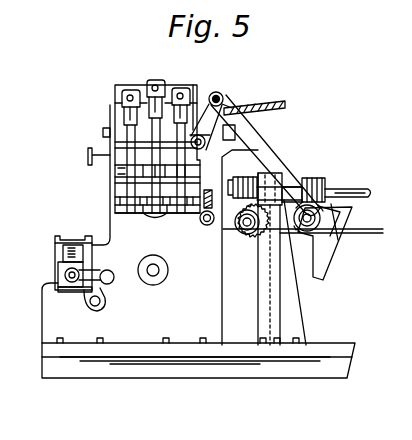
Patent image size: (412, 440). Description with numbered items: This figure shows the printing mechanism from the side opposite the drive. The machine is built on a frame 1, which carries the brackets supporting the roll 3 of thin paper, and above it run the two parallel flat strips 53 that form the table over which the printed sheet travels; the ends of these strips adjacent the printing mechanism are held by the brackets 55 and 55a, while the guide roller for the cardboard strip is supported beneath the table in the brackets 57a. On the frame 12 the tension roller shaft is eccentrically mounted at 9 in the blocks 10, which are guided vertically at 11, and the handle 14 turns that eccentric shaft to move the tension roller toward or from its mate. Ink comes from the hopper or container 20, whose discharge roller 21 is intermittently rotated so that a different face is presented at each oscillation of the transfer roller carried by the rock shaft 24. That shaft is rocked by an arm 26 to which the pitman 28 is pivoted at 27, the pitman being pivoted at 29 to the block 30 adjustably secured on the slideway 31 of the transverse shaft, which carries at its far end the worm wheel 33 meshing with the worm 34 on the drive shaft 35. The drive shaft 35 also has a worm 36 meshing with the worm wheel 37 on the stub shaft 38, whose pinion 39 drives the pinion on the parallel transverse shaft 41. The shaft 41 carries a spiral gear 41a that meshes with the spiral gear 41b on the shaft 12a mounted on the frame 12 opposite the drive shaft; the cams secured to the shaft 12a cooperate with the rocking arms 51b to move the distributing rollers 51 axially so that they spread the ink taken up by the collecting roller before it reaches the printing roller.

The frame 1 is at (197, 372).
The frame 12 is at (46, 328).
The shaft 12a is at (143, 216).
The distributing rollers 51 is at (180, 86).
The rocking arms 51b is at (170, 147).
The arm 26 is at (215, 92).
The pivotal connection 27 is at (223, 96).
The hopper or container 20 is at (270, 104).
The roller 21 is at (232, 104).
The rock shaft 24 is at (247, 148).
The pitman 28 is at (272, 160).
The pivotal connection 29 is at (294, 238).
The worm 36 is at (236, 180).
The worm 34 is at (330, 182).
The drive shaft 35 is at (357, 193).
The worm wheel 37 is at (277, 180).
The block 30 is at (338, 228).
The flat strips 53 is at (374, 236).
The stub shaft 38 is at (248, 238).
The pinion 39 is at (236, 236).
The slideway 31 is at (322, 226).
The worm wheel 33 is at (320, 250).
The brackets 57a is at (330, 268).
The bracket 55 is at (292, 316).
The bracket 55a is at (276, 325).
The shaft 41 is at (206, 227).
The spiral gear 41a is at (200, 250).
The spiral gear 41b is at (203, 210).
The guides 11 is at (60, 249).
The roll 3 is at (62, 257).
The eccentric mounting 9 is at (62, 270).
The handle 14 is at (107, 285).
The blocks 10 is at (56, 283).